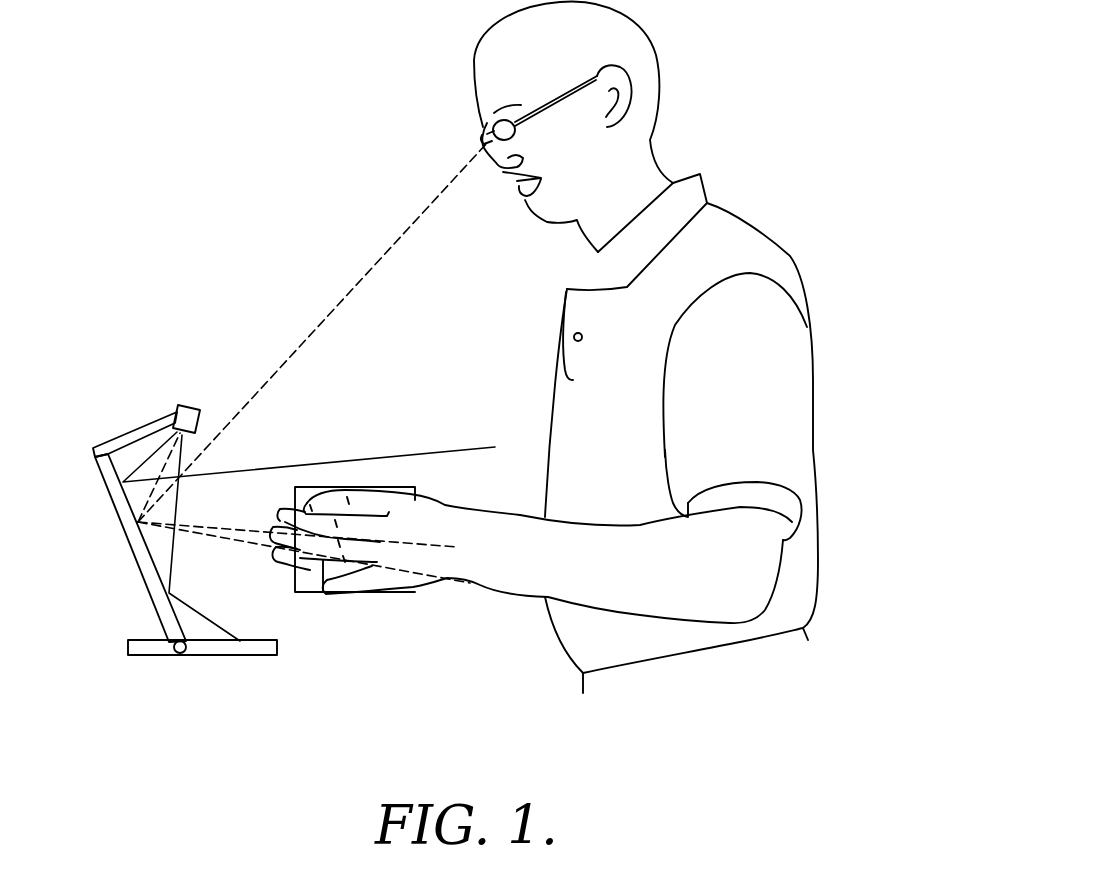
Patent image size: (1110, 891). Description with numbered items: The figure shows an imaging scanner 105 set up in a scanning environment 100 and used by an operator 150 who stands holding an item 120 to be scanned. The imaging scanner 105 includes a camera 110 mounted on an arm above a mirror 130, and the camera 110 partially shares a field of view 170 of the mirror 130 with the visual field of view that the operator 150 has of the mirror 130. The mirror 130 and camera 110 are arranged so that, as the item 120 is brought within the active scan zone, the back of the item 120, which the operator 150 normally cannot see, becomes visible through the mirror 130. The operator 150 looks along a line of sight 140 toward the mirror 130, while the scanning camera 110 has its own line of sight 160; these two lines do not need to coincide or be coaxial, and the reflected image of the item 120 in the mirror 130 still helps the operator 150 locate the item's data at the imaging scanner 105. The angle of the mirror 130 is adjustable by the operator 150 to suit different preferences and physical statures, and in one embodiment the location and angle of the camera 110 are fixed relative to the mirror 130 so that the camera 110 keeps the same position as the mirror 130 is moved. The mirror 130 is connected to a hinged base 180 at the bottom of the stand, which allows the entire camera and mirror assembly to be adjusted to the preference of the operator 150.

The scanning environment 100 is at (113, 120).
The imaging scanner 105 is at (115, 575).
The camera 110 is at (187, 397).
The item 120 is at (400, 489).
The mirror 130 is at (162, 559).
The line of sight 140 is at (334, 299).
The operator 150 is at (806, 274).
The line of sight 160 is at (423, 589).
The field of view 170 is at (368, 460).
The hinged base 180 is at (172, 667).